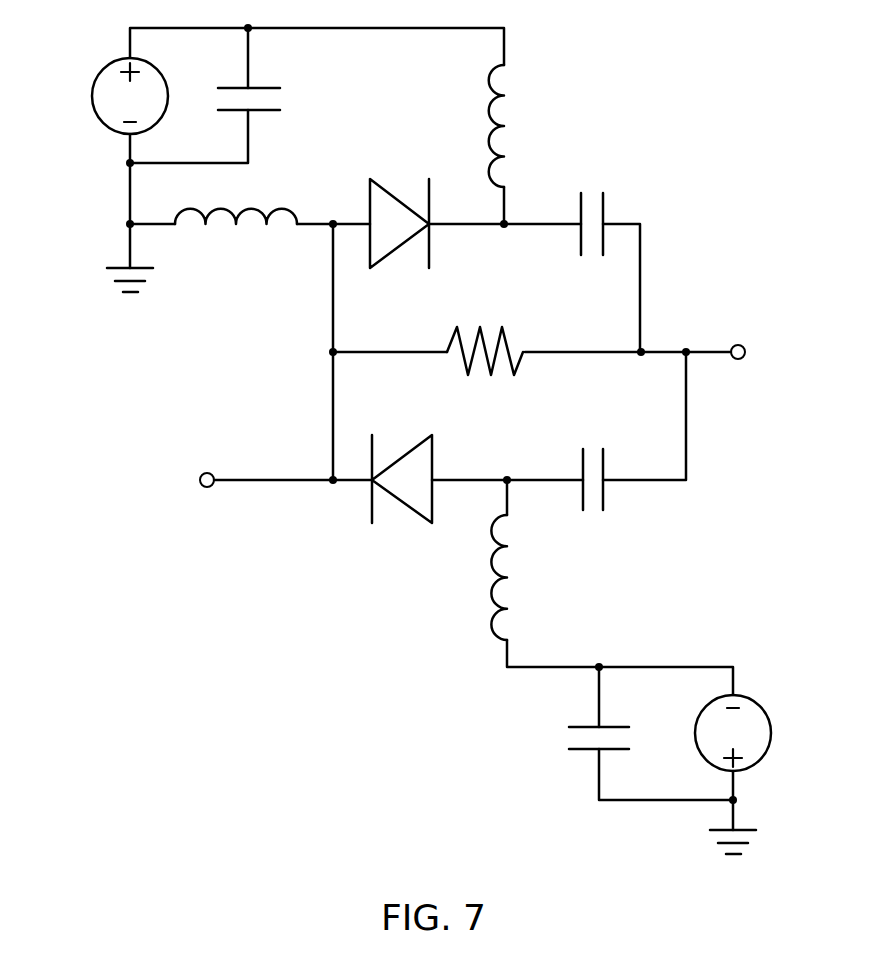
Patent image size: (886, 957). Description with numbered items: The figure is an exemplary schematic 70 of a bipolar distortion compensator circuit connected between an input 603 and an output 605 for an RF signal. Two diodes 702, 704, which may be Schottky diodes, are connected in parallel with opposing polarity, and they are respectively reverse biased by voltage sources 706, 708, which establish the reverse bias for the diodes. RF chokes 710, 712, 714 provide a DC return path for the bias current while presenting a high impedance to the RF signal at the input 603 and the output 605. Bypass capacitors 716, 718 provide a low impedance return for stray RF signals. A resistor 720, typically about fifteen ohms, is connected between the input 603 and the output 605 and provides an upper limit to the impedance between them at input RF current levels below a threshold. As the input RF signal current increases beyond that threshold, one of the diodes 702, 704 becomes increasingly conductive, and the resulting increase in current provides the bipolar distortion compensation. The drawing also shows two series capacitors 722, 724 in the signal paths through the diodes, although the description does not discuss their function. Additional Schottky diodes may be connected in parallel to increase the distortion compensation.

The schematic 70 is at (573, 113).
The input 603 is at (290, 479).
The output 605 is at (716, 351).
The diode 702 is at (412, 506).
The diode 704 is at (389, 190).
The voltage source 706 is at (104, 69).
The voltage source 708 is at (761, 706).
The RF choke 710 is at (258, 210).
The RF choke 712 is at (490, 110).
The RF choke 714 is at (495, 612).
The bypass capacitor 716 is at (270, 88).
The bypass capacitor 718 is at (573, 750).
The resistor 720 is at (481, 326).
The capacitor 722 is at (605, 491).
The capacitor 724 is at (604, 204).